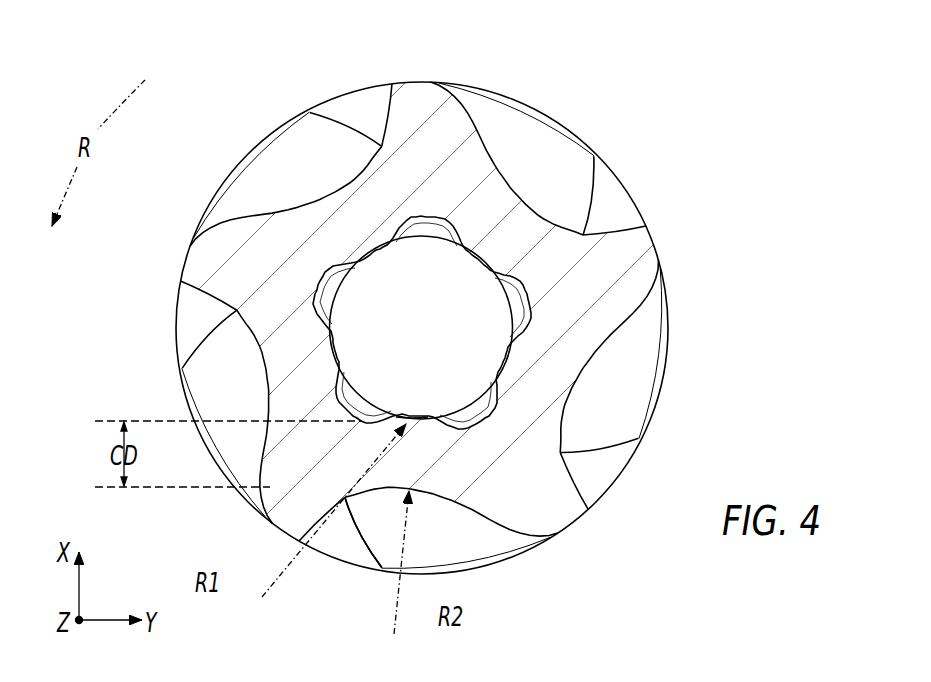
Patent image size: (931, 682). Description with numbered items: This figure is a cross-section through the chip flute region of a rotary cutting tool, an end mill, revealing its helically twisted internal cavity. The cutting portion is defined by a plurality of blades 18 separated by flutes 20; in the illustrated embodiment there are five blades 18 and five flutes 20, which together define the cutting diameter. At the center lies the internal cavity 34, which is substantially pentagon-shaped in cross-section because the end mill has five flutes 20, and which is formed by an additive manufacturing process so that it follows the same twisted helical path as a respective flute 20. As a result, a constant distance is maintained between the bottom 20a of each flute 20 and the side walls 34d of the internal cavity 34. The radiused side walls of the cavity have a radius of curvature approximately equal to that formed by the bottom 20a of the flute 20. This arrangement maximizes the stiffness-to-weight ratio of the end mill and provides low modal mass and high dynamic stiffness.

The blade 18 is at (432, 74).
The flute 20 is at (297, 158).
The bottom of flute 20a is at (403, 492).
The internal cavity 34 is at (358, 325).
The side walls of internal cavity 34d is at (412, 416).